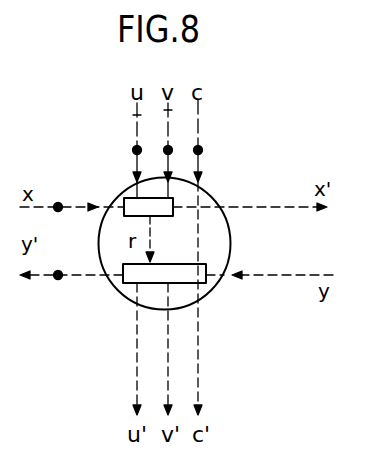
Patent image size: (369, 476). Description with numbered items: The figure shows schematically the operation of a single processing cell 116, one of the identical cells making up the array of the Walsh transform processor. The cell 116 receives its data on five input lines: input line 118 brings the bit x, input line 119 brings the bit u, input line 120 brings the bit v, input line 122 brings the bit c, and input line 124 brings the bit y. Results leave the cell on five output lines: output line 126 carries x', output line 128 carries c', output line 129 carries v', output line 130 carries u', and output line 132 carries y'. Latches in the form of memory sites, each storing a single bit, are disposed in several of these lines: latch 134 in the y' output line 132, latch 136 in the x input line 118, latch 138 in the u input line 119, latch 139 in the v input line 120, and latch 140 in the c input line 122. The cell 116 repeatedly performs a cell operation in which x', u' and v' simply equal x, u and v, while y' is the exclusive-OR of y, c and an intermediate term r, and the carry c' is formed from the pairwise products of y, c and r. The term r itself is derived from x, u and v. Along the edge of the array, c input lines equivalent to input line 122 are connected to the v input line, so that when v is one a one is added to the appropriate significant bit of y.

The processing cell 116 is at (253, 139).
The input line 118 is at (88, 212).
The input line 119 is at (133, 115).
The input line 120 is at (169, 112).
The input line 122 is at (198, 110).
The input line 124 is at (298, 275).
The output line 126 is at (270, 207).
The output line 128 is at (198, 328).
The output line 129 is at (168, 365).
The output line 130 is at (137, 352).
The output line 132 is at (104, 272).
The latch 134 is at (58, 279).
The latch 136 is at (58, 203).
The latch 138 is at (133, 150).
The latch 139 is at (164, 152).
The latch 140 is at (202, 152).